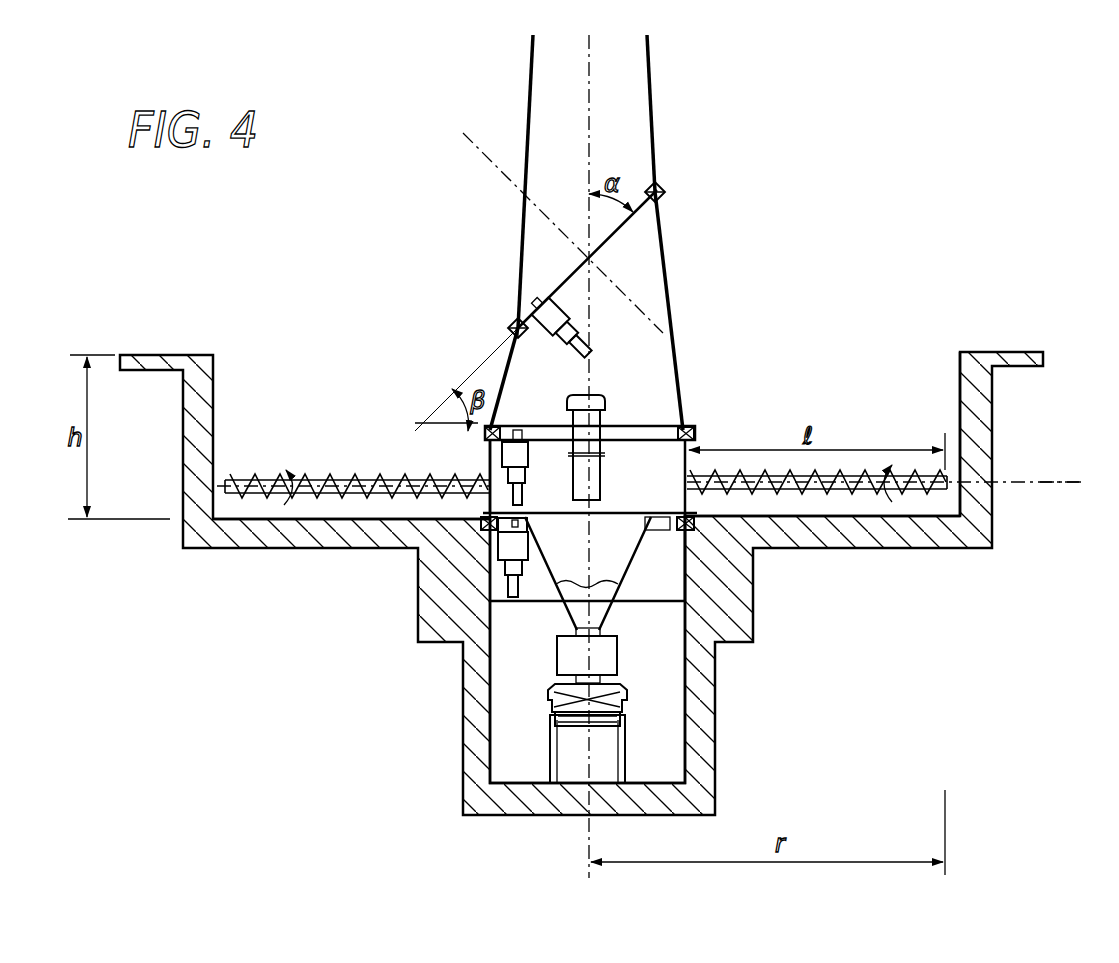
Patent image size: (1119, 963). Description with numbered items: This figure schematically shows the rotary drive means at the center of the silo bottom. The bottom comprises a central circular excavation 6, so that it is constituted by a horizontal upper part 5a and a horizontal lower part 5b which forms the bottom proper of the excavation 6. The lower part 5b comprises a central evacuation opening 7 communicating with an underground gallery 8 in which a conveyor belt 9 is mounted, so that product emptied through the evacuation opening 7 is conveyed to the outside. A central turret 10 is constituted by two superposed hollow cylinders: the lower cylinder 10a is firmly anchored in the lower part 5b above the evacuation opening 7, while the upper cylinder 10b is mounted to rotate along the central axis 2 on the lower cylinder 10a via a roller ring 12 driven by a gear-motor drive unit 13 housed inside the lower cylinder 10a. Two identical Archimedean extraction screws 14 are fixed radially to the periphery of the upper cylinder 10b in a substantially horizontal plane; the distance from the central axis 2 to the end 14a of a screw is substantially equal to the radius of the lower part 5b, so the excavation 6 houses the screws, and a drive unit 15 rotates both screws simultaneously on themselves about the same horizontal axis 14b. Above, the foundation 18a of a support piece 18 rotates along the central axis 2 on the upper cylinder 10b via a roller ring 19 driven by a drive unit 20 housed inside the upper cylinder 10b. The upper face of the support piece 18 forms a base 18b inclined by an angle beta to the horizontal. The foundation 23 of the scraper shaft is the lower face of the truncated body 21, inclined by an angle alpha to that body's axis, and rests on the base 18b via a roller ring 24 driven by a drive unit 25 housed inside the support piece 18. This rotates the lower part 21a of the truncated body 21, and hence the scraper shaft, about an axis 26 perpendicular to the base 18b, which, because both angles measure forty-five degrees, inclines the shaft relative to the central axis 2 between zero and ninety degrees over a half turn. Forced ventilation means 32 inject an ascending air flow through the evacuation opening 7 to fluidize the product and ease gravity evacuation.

The central axis 2 is at (589, 55).
The horizontal upper part 5a is at (158, 348).
The horizontal lower part 5b is at (350, 515).
The central circular excavation 6 is at (923, 390).
The central evacuation opening 7 is at (612, 580).
The underground gallery 8 is at (502, 764).
The conveyor belt 9 is at (570, 765).
The central turret 10 is at (479, 461).
The lower cylinder 10a is at (665, 585).
The upper cylinder 10b is at (500, 495).
The roller ring 12 is at (469, 536).
The drive unit 13 is at (528, 565).
The extraction screw 14 is at (336, 473).
The end of extraction screw 14a is at (228, 480).
The horizontal axis 14b is at (1052, 488).
The drive unit 15 is at (589, 425).
The support piece 18 is at (657, 288).
The foundation of support piece 18a is at (650, 420).
The base 18b is at (648, 203).
The roller ring 19 is at (699, 432).
The drive unit 20 is at (526, 445).
The truncated body 21 is at (527, 75).
The lower part of truncated body 21a is at (625, 88).
The foundation of scraper shaft 23 is at (545, 287).
The roller ring 24 is at (664, 185).
The drive unit 25 is at (511, 336).
The axis 26 is at (490, 133).
The forced ventilation means 32 is at (565, 660).